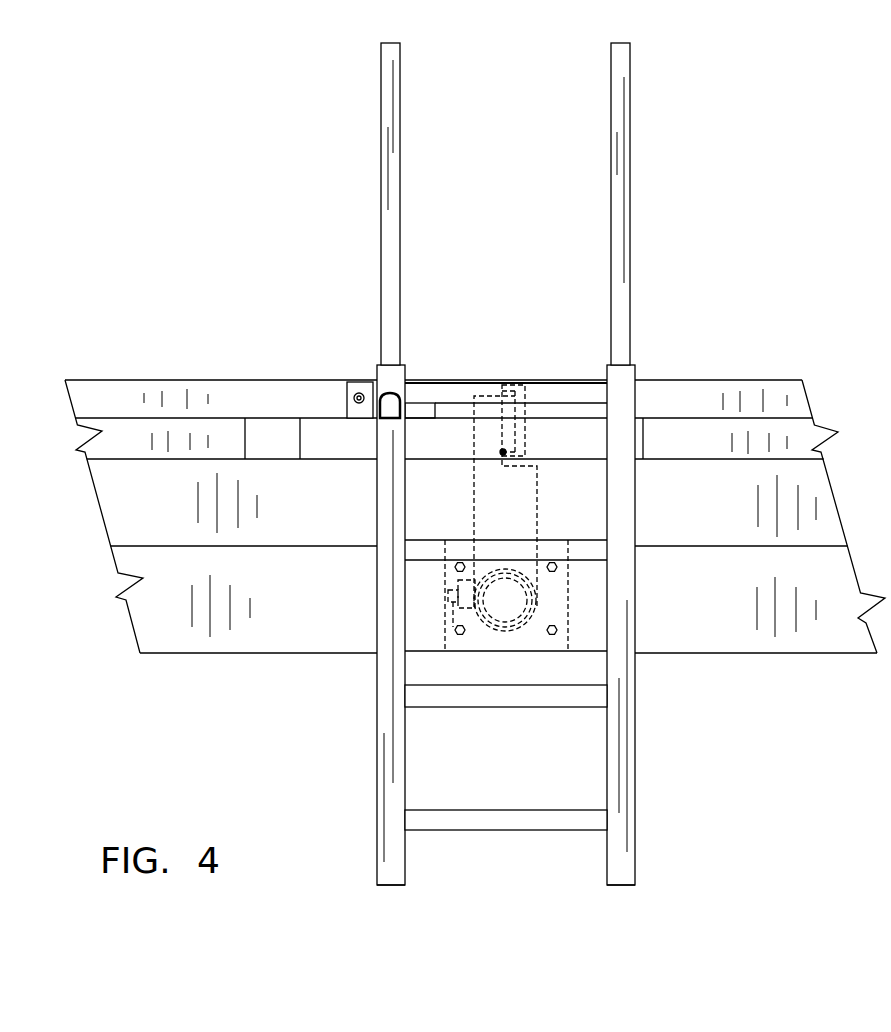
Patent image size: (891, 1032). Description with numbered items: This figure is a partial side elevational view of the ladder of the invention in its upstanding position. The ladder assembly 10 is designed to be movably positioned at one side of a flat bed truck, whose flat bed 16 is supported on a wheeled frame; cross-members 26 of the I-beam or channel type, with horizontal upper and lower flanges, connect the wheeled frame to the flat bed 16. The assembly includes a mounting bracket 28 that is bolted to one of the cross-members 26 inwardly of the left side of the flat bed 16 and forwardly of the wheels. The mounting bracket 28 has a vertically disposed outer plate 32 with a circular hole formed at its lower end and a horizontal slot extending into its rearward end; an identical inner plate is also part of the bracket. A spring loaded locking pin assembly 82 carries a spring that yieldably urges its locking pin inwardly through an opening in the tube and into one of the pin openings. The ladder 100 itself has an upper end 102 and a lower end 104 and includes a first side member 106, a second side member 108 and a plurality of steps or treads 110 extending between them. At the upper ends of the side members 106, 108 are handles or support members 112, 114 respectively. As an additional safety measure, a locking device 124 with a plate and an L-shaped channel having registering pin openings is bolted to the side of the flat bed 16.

The ladder assembly 10 is at (521, 476).
The flat bed 16 is at (763, 380).
The cross-members 26 is at (523, 433).
The mounting bracket 28 is at (538, 498).
The outer plate 32 is at (497, 471).
The spring loaded locking pin assembly 82 is at (453, 598).
The ladder 100 is at (513, 641).
The upper end 102 is at (587, 200).
The lower end 104 is at (567, 872).
The first side member 106 is at (635, 755).
The second side member 108 is at (375, 783).
The steps or treads 110 is at (516, 810).
The handle or support member 112 is at (630, 195).
The handle or support member 114 is at (393, 198).
The locking device 124 is at (373, 385).